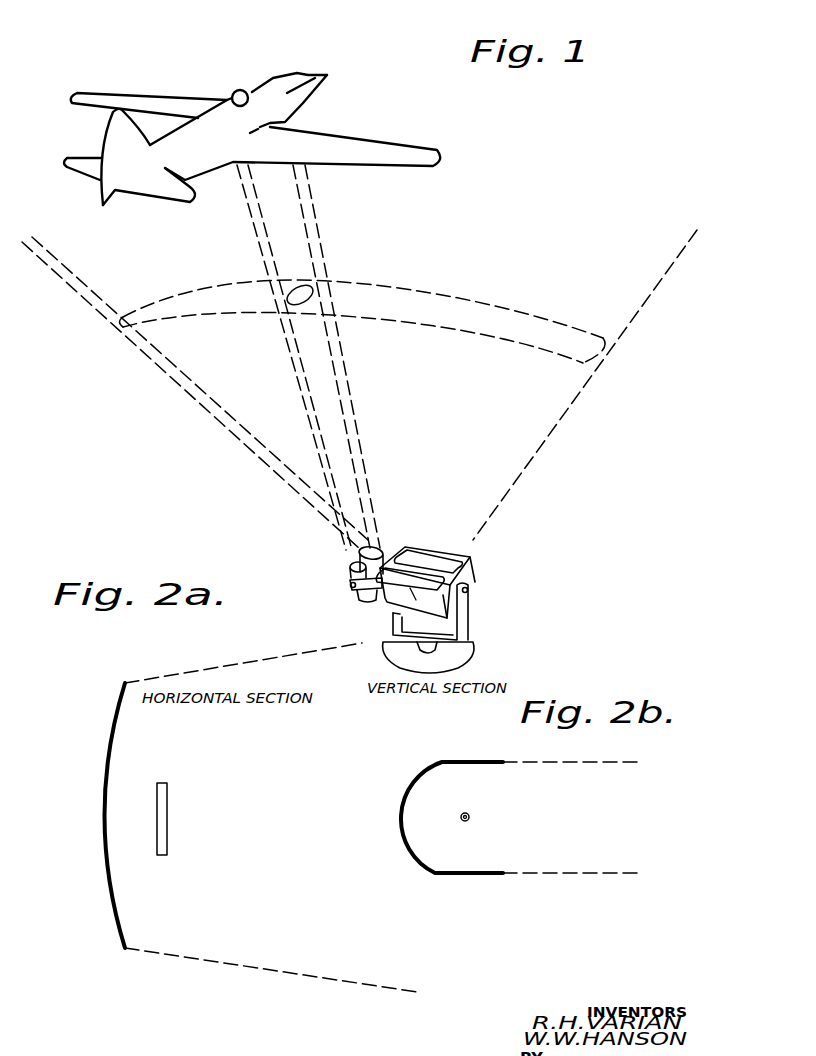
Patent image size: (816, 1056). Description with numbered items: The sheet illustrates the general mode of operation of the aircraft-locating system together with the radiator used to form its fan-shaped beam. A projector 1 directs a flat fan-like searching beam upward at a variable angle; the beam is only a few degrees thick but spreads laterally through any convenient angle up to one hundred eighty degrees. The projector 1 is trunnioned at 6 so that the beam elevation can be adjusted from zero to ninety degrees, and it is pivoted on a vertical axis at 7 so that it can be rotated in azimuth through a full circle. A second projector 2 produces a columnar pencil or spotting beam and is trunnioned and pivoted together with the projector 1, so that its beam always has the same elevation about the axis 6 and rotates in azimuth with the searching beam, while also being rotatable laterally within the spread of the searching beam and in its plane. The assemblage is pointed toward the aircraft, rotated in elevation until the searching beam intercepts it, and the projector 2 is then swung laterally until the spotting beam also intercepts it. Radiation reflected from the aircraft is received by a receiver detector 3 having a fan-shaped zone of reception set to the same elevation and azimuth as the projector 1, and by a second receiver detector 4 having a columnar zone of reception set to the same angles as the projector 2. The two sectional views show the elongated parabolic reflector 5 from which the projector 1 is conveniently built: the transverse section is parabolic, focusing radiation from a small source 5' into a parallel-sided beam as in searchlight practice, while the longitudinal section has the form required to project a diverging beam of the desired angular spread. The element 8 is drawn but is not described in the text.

In FIG. 1, the projector 1 is at (439, 548).
In FIG. 1, the second projector 2 is at (380, 546).
In FIG. 1, the receiver detector 3 is at (412, 589).
In FIG. 1, the second receiver detector 4 is at (350, 568).
In FIG. 2A, the elongated parabolic reflector 5 is at (261, 817).
In FIG. 2B, the elongated parabolic reflector 5 is at (519, 817).
In FIG. 2A, the small source 5' is at (186, 819).
In FIG. 2B, the small source 5' is at (487, 804).
In FIG. 1, the trunnion 6 is at (472, 592).
In FIG. 1, the vertical axis pivot 7 is at (437, 653).
In FIG. 1, the mounting block 8 is at (348, 588).